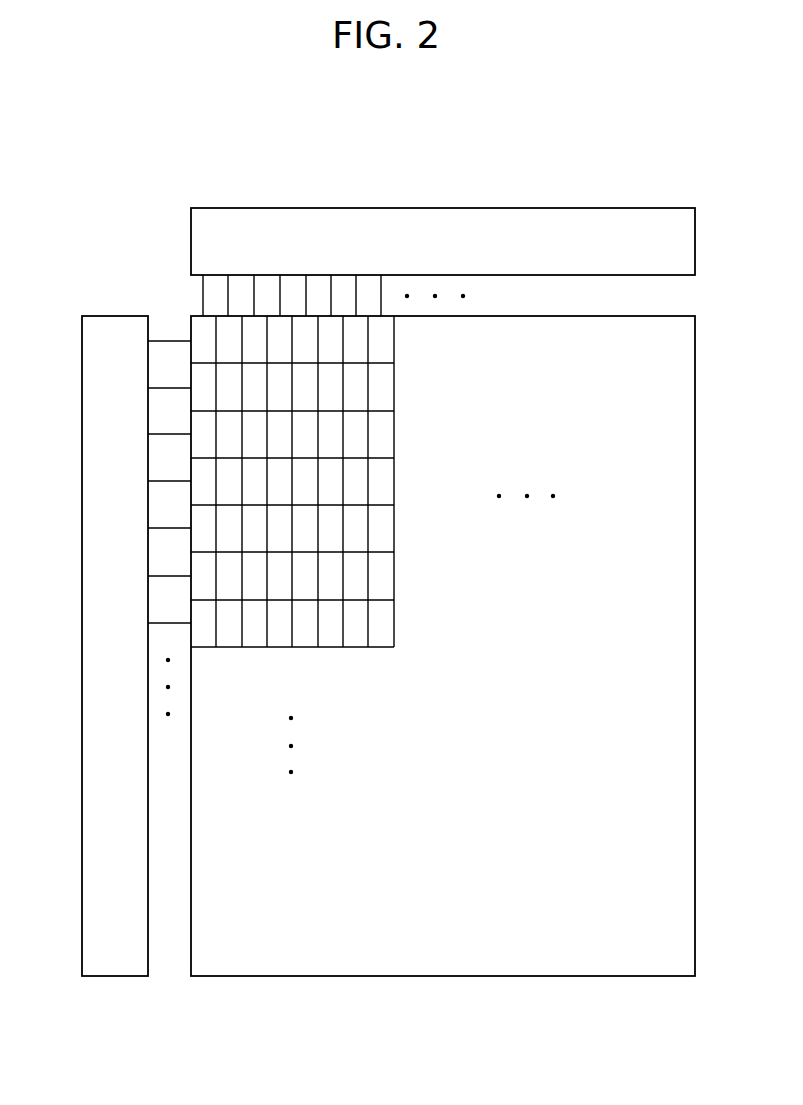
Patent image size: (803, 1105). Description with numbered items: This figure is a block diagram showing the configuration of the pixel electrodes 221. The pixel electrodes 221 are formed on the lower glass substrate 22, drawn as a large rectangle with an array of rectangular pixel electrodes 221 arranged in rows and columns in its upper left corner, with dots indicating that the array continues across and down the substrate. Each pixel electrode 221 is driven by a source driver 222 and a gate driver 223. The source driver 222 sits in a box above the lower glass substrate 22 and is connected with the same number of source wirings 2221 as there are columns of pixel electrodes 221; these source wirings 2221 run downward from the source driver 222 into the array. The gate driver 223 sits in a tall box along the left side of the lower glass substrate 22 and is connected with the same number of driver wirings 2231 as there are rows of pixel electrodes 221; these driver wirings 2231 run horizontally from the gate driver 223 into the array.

The lower glass substrate 22 is at (667, 977).
The pixel electrode 221 is at (201, 332).
The source driver 222 is at (218, 225).
The source wiring 2221 is at (235, 297).
The gate driver 223 is at (110, 965).
The driver wiring 2231 is at (172, 386).